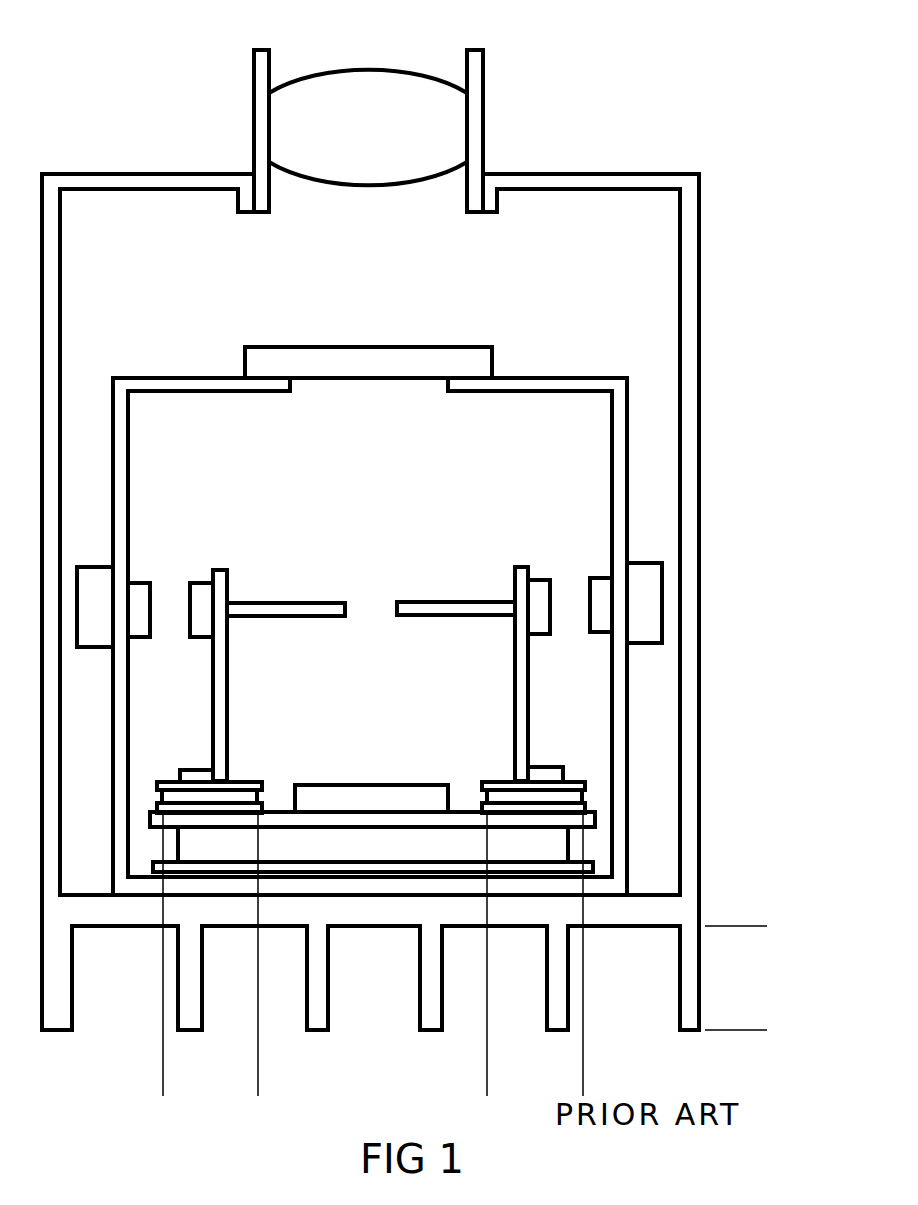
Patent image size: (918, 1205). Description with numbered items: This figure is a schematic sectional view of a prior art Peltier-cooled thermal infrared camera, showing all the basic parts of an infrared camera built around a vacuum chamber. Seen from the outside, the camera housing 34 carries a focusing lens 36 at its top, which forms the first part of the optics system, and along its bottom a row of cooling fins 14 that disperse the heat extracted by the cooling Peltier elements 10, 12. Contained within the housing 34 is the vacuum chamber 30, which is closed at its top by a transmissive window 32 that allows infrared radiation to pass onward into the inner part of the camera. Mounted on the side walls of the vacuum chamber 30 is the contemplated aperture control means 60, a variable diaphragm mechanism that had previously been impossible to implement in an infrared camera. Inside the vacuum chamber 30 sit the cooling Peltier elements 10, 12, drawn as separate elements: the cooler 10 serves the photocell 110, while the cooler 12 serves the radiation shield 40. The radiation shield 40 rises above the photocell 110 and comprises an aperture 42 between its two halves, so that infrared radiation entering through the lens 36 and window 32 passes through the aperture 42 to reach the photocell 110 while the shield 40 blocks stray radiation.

The cooling Peltier element 10 is at (163, 1082).
The cooling Peltier element 12 is at (258, 1082).
The cooling fins 14 is at (728, 926).
The vacuum chamber 30 is at (627, 418).
The transmissive window 32 is at (245, 356).
The camera housing 34 is at (652, 173).
The focusing lens 36 is at (432, 119).
The radiation shield 40 is at (517, 566).
The aperture 42 is at (368, 604).
The aperture control means 60 is at (663, 600).
The photocell 110 is at (362, 784).